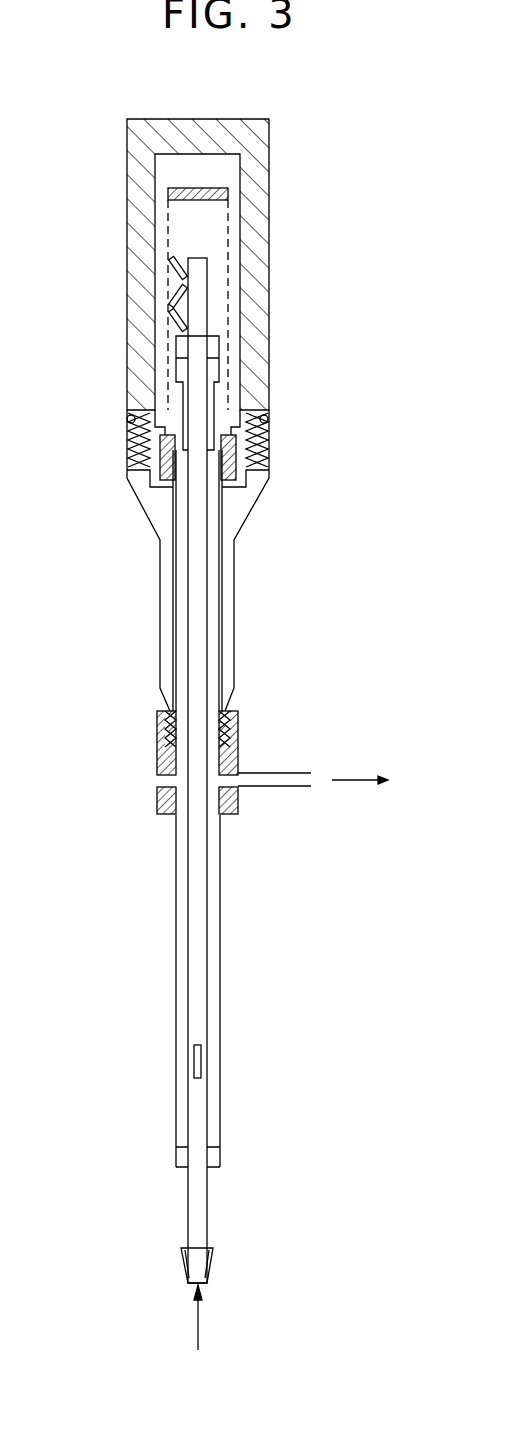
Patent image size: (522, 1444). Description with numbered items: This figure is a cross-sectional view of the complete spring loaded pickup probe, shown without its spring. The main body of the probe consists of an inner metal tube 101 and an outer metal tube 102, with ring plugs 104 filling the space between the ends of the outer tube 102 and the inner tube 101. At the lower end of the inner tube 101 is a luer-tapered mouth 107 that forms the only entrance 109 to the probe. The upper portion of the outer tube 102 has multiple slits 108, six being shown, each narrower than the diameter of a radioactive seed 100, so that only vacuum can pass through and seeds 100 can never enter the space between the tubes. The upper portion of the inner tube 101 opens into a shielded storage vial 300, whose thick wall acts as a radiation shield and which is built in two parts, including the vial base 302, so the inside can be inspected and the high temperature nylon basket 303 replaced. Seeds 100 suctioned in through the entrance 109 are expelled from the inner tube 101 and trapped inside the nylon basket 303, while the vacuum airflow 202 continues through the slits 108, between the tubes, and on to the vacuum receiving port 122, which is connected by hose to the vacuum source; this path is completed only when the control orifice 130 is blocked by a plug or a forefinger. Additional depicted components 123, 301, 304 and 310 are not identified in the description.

The radioactive seed 100 is at (170, 280).
The inner metal tube 101 is at (213, 988).
The outer metal tube 102 is at (220, 932).
The ring plugs 104 is at (220, 1153).
The luer-tapered mouth 107 is at (281, 1266).
The entrance 109 is at (212, 1262).
The slits 108 is at (215, 383).
The vacuum receiving port 122 is at (290, 773).
The seal 123 is at (238, 735).
The control orifice 130 is at (160, 721).
The vacuum airflow path 202 is at (198, 1322).
The shielded storage vial 300 is at (253, 227).
The housing 301 is at (234, 575).
The vial base 302 is at (269, 175).
The nylon basket 303 is at (232, 303).
The seal ring 304 is at (236, 468).
The O-ring 310 is at (268, 419).